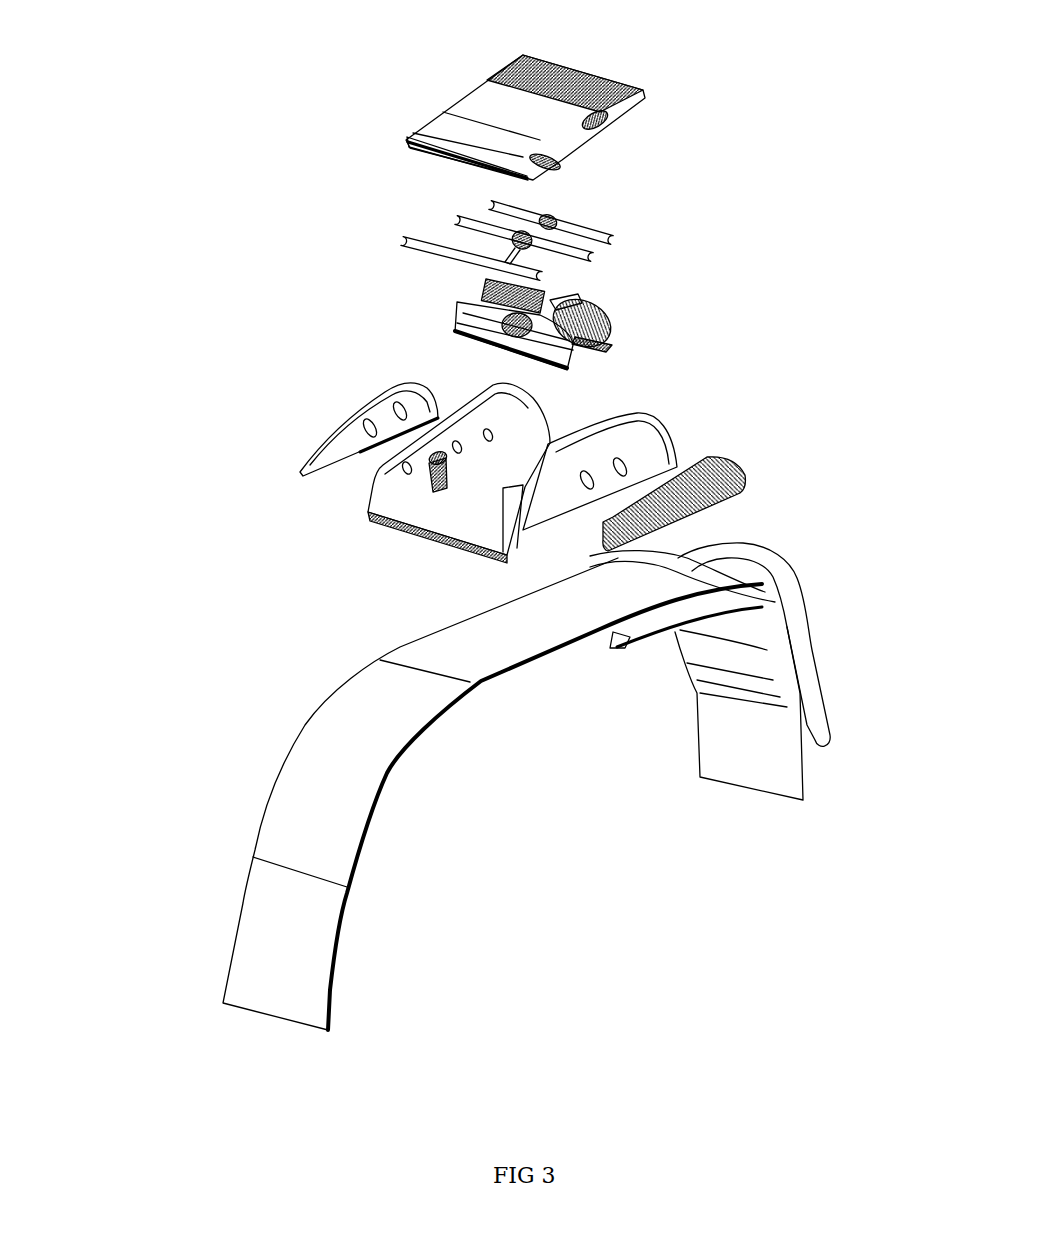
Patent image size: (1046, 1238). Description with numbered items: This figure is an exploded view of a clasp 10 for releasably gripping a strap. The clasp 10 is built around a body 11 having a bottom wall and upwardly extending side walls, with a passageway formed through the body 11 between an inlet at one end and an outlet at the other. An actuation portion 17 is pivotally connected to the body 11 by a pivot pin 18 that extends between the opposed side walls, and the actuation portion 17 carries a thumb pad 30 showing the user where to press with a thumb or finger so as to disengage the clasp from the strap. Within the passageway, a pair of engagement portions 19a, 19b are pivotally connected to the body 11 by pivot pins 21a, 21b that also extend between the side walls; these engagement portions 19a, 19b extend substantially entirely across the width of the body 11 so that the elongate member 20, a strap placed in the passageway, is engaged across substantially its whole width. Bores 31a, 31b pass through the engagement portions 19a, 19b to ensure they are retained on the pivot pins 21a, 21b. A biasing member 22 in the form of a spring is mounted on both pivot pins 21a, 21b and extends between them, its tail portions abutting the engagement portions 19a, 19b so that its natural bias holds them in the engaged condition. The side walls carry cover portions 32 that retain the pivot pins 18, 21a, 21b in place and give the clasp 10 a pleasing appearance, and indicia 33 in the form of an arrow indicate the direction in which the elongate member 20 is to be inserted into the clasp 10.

The clasp 10 is at (337, 115).
The body 11 is at (370, 512).
The actuation portion 17 is at (407, 140).
The pivot pin 18 is at (397, 240).
The engagement portion 19a is at (572, 304).
The engagement portion 19b is at (455, 330).
The elongate member 20 is at (516, 683).
The pivot pin 21a is at (639, 243).
The pivot pin 21b is at (458, 218).
The biasing member 22 is at (514, 239).
The thumb pad 30 is at (643, 95).
The bore 31a is at (623, 321).
The bore 31b is at (612, 343).
The cover portion 32 is at (296, 485).
The indicia 33 is at (430, 525).